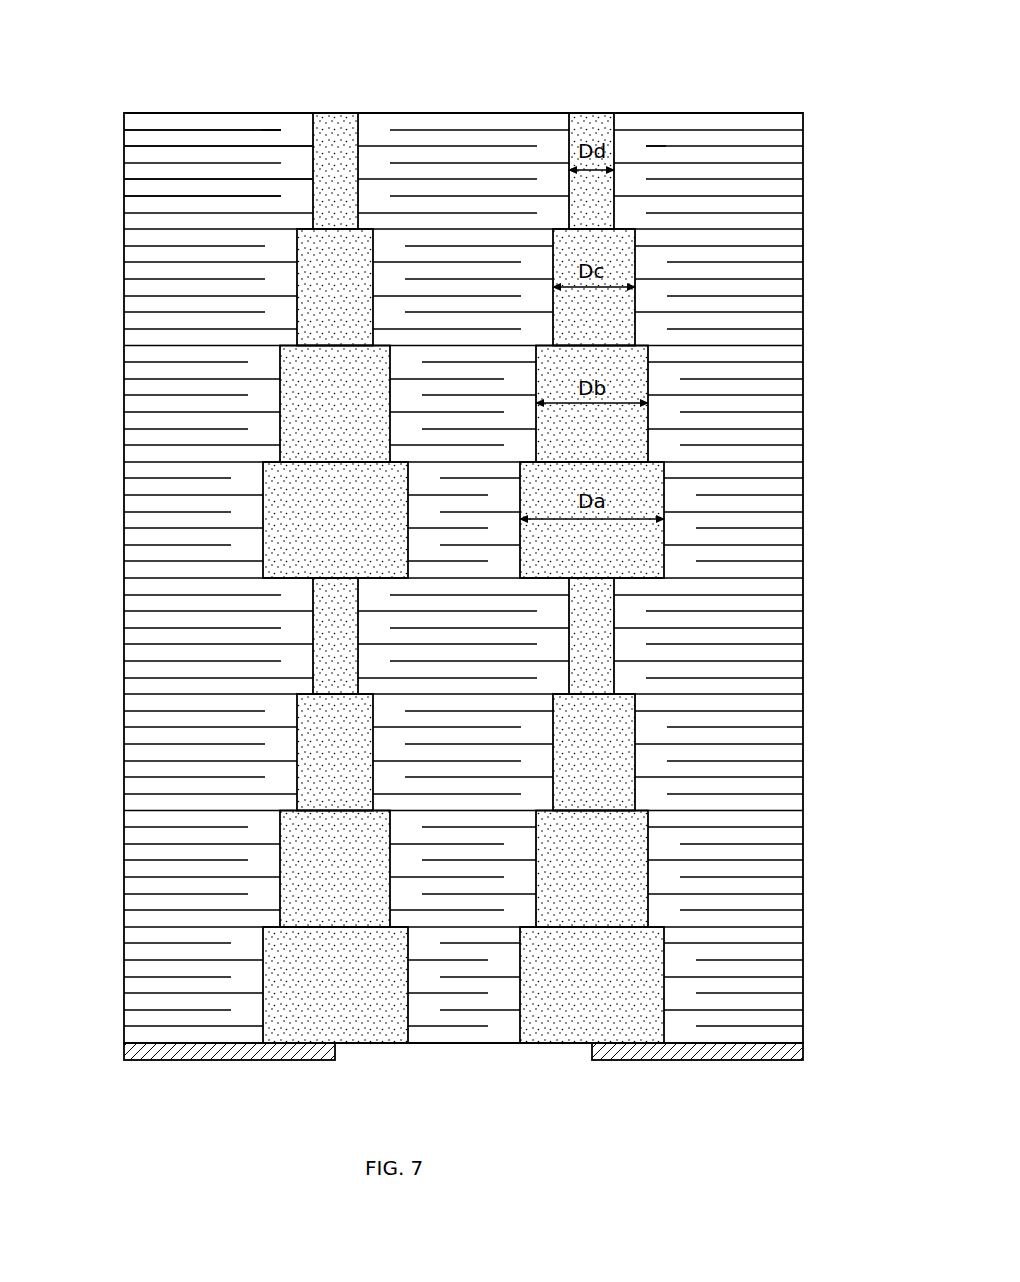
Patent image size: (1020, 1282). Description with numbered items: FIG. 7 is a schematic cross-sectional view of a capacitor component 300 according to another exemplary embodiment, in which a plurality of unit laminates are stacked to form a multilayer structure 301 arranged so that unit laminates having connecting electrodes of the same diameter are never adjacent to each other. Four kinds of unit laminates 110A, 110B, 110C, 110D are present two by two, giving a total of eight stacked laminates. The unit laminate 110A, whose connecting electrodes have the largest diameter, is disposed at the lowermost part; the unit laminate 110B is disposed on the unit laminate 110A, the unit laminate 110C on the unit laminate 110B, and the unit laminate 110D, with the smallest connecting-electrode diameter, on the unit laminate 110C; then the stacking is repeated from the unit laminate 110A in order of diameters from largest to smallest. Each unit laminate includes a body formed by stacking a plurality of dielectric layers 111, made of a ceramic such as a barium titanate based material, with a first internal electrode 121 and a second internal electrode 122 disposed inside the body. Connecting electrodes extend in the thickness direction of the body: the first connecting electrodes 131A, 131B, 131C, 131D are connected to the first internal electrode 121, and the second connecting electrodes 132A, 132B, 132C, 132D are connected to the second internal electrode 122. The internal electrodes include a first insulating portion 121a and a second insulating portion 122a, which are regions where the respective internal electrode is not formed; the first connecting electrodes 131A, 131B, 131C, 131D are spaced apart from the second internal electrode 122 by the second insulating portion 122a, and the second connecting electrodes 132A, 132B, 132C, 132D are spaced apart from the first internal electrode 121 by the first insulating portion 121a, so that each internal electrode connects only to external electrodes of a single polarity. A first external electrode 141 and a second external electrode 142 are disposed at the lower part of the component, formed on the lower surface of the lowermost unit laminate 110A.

The capacitor component 300 is at (417, 25).
The multilayer structure 301 is at (467, 106).
The unit laminate 110A is at (810, 462).
The unit laminate 110B is at (810, 346).
The unit laminate 110C is at (810, 229).
The unit laminate 110D is at (810, 113).
The dielectric layer 111 is at (145, 187).
The first internal electrode 121 is at (143, 148).
The second internal electrode 122 is at (143, 126).
The first insulating portion 121a is at (630, 142).
The second insulating portion 122a is at (296, 126).
The first connecting electrode 131A is at (310, 497).
The first connecting electrode 131B is at (308, 378).
The first connecting electrode 131C is at (310, 252).
The first connecting electrode 131D is at (335, 120).
The second connecting electrode 132A is at (548, 556).
The second connecting electrode 132B is at (565, 440).
The second connecting electrode 132C is at (582, 316).
The second connecting electrode 132D is at (592, 118).
The first external electrode 141 is at (190, 1060).
The second external electrode 142 is at (735, 1060).